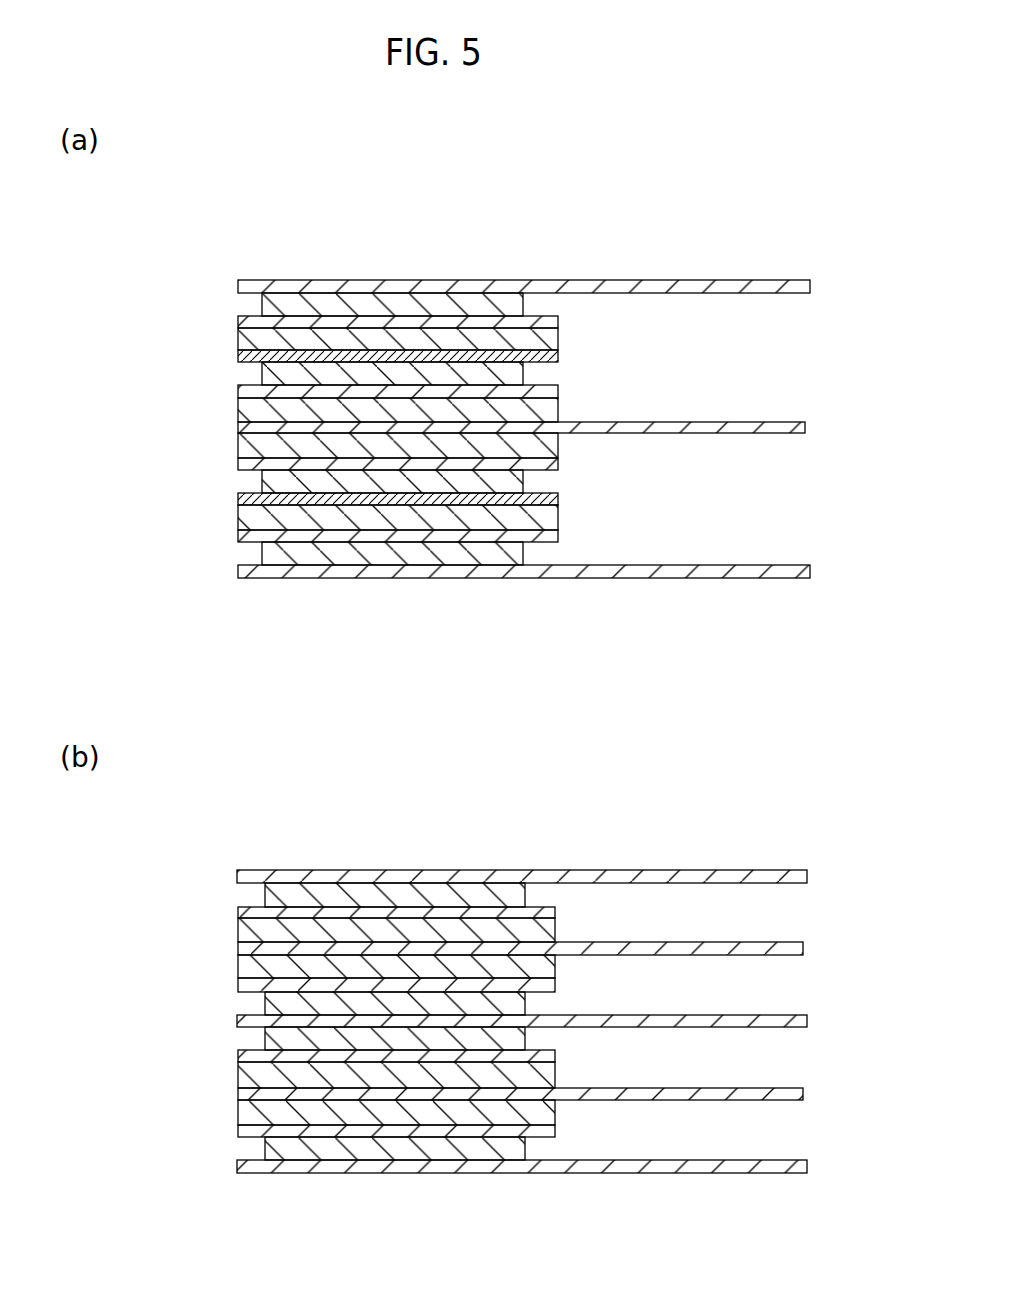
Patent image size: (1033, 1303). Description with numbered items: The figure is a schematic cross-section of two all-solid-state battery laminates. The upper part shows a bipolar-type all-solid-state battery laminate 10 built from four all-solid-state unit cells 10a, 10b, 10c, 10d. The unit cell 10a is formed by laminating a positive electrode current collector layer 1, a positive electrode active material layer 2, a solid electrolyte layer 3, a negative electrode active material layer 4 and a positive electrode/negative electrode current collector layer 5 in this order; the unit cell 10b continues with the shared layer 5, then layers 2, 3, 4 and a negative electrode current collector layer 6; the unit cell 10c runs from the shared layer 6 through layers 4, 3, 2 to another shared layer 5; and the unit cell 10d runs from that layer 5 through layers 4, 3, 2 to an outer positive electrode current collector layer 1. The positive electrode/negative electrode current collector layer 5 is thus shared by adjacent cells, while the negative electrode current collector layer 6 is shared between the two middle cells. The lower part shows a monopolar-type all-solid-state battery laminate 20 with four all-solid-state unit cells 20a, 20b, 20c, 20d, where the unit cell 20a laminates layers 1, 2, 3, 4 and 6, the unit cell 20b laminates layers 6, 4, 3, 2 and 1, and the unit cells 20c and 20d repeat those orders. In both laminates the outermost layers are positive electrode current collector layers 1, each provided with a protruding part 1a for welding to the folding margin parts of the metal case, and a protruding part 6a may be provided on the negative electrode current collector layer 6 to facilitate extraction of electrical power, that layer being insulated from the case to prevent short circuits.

The positive electrode current collector layer 1 is at (240, 286).
The protruding part 1a is at (563, 300).
The positive electrode active material layer 2 is at (264, 304).
The solid electrolyte layer 3 is at (240, 322).
The negative electrode active material layer 4 is at (240, 339).
The positive electrode/negative electrode current collector layer 5 is at (240, 356).
The negative electrode current collector layer 6 is at (240, 427).
The protruding part 6a is at (563, 440).
The bipolar-type all-solid-state battery laminate 10 is at (648, 235).
The all-solid-state unit cell 10a is at (162, 215).
The all-solid-state unit cell 10b is at (142, 312).
The all-solid-state unit cell 10c is at (162, 410).
The all-solid-state unit cell 10d is at (140, 512).
The monopolar-type all-solid-state battery laminate 20 is at (644, 838).
The all-solid-state unit cell 20a is at (160, 808).
The all-solid-state unit cell 20b is at (139, 908).
The all-solid-state unit cell 20c is at (160, 1010).
The all-solid-state unit cell 20d is at (139, 1108).